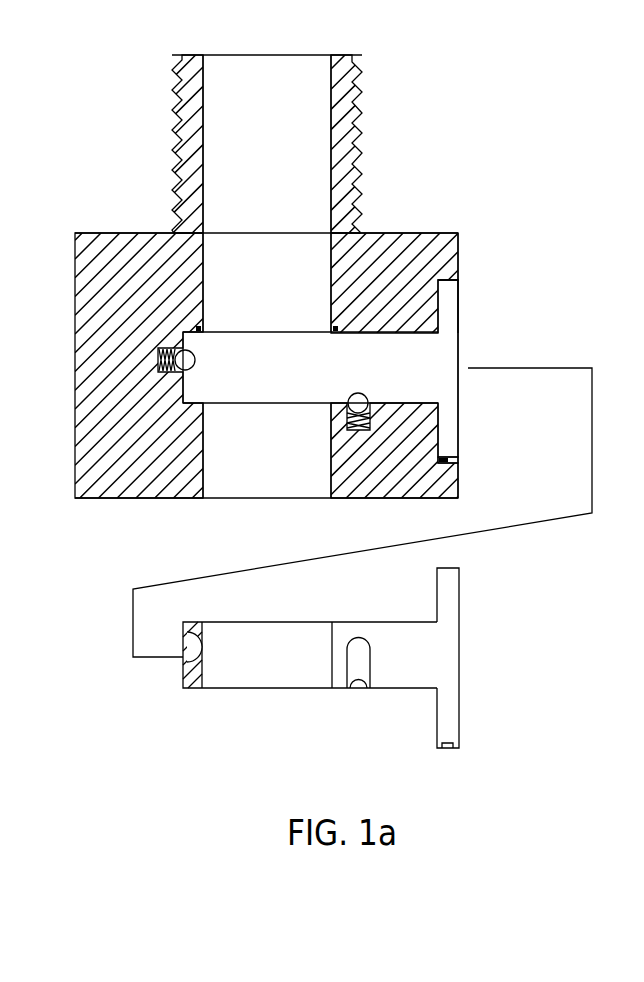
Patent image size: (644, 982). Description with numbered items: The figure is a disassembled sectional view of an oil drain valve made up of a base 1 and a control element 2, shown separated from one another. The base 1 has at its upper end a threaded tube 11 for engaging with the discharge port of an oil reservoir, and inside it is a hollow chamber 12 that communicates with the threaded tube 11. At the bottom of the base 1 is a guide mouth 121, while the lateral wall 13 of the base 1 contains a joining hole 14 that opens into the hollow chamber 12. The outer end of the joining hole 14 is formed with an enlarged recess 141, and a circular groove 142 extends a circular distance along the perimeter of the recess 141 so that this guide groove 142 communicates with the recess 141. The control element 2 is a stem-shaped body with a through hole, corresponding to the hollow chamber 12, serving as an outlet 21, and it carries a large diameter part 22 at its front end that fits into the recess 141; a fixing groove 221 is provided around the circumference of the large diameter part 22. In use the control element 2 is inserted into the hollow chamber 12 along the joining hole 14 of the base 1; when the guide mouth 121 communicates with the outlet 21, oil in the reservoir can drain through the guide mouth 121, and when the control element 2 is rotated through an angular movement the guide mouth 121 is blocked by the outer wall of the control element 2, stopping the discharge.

The base 1 is at (158, 214).
The threaded tube 11 is at (345, 115).
The hollow chamber 12 is at (343, 226).
The lateral wall 13 is at (433, 233).
The guide mouth 121 is at (257, 483).
The joining hole 14 is at (400, 380).
The enlarged recess 141 is at (448, 295).
The circular groove 142 is at (460, 460).
The control element 2 is at (365, 691).
The outlet 21 is at (285, 663).
The large diameter part 22 is at (450, 583).
The fixing groove 221 is at (452, 750).